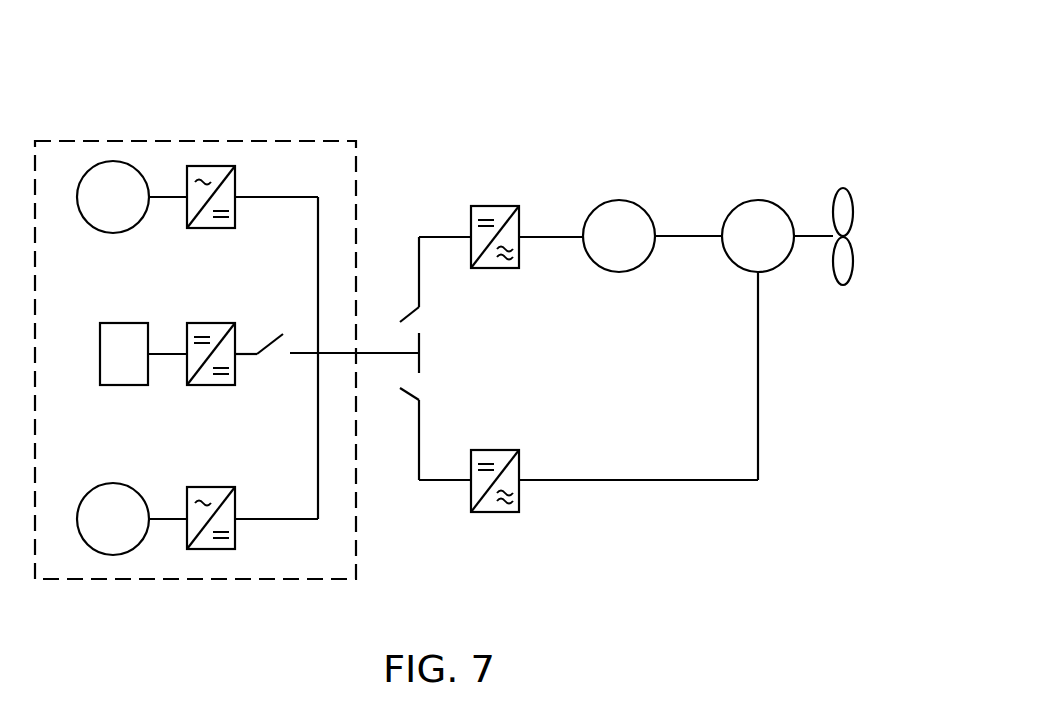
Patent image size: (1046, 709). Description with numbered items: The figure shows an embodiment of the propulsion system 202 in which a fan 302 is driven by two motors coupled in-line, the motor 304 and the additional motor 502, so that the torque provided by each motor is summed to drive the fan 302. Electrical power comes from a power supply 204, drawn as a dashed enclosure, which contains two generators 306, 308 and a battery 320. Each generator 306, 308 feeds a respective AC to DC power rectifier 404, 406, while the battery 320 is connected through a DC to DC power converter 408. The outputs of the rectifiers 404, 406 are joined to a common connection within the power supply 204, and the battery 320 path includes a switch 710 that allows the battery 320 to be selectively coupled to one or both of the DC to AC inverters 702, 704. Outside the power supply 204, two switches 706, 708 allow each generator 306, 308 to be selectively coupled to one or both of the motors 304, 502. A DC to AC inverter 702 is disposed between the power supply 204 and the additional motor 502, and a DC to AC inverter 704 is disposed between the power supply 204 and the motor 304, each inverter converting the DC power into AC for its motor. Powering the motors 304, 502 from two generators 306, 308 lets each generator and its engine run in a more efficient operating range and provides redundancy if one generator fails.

The propulsion system 202 is at (678, 70).
The power supply 204 is at (291, 140).
The fan 302 is at (840, 188).
The motor 304 is at (757, 200).
The generator 306 is at (113, 161).
The generator 308 is at (112, 483).
The battery 320 is at (123, 322).
The AC to DC power rectifier 404 is at (208, 165).
The AC to DC power rectifier 406 is at (208, 486).
The DC to DC power converter 408 is at (208, 322).
The additional motor 502 is at (618, 200).
The DC to AC inverter 702 is at (492, 205).
The DC to AC inverter 704 is at (492, 449).
The switch 706 is at (399, 318).
The switch 708 is at (400, 392).
The switch 710 is at (272, 338).